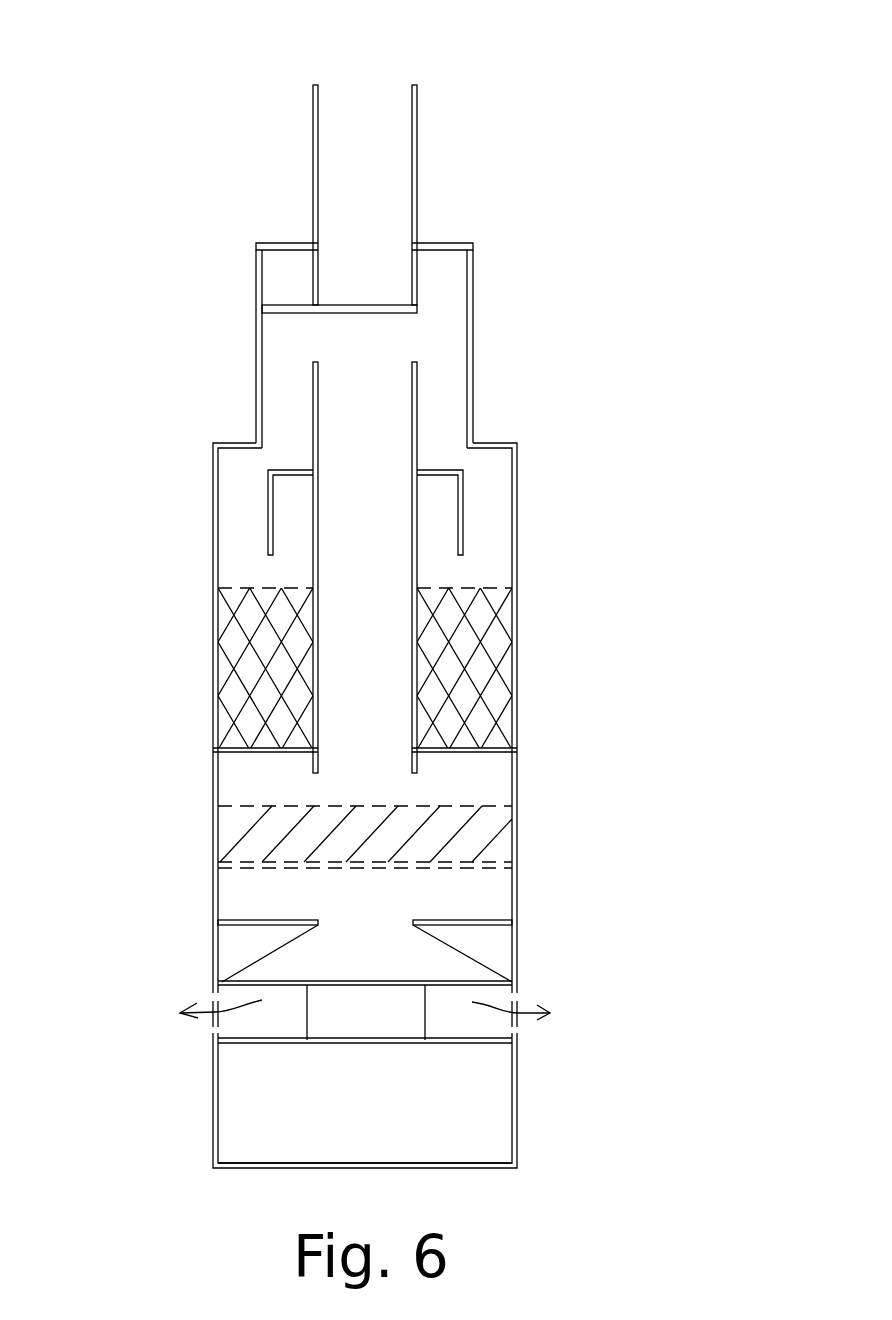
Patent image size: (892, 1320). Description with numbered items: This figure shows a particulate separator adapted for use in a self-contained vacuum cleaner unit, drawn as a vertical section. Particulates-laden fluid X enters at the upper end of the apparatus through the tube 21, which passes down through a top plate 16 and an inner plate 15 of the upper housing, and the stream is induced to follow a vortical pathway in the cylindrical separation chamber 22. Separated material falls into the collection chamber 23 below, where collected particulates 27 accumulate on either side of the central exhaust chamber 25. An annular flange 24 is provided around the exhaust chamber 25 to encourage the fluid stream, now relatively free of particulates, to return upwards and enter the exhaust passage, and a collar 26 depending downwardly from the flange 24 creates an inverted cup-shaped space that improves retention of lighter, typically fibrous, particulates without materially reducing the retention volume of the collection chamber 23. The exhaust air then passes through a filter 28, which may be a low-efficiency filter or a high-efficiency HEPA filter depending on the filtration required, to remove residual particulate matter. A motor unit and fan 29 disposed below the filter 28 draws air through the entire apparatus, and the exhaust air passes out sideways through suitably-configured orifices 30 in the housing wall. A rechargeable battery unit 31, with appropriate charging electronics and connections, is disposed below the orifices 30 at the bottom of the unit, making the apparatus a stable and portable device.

The particulates-laden fluid X is at (357, 182).
The plate 15 is at (287, 305).
The collar top plate 16 is at (285, 243).
The tube 21 is at (417, 148).
The separation chamber 22 is at (438, 368).
The collection chamber 23 is at (243, 565).
The annular flange 24 is at (290, 467).
The exhaust chamber 25 is at (413, 570).
The collar 26 is at (463, 497).
The collected particulates 27 is at (478, 672).
The filter 28 is at (435, 832).
The motor unit and fan 29 is at (388, 977).
The orifices 30 is at (483, 1013).
The rechargeable battery unit 31 is at (392, 1110).